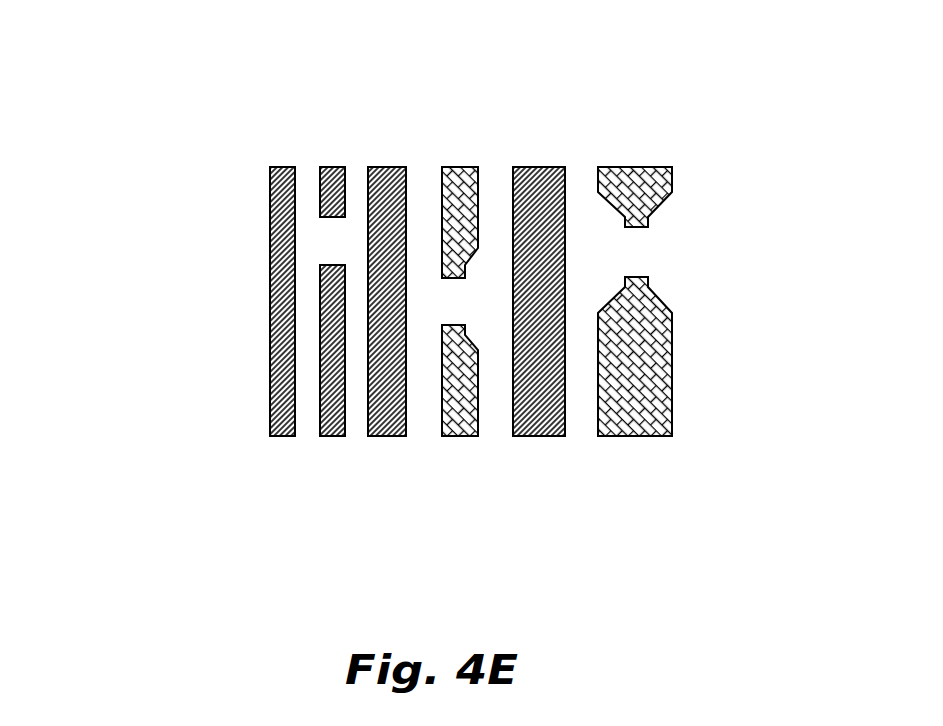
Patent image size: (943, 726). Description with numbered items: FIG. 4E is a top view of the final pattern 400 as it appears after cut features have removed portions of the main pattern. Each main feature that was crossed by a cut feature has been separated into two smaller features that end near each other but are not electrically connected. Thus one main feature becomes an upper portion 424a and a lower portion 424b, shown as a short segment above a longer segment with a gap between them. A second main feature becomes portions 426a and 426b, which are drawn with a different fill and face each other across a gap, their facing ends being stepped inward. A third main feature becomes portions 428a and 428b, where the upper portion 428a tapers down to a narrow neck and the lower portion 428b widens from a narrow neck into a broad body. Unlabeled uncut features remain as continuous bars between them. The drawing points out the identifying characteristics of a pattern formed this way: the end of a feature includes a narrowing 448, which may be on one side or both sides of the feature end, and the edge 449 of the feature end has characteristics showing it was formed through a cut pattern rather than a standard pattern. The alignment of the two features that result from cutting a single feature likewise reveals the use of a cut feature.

The pattern 400 is at (203, 141).
The first portion of main feature 424a is at (331, 156).
The second portion of main feature 424b is at (331, 447).
The first portion of main feature 426a is at (459, 156).
The second portion of main feature 426b is at (459, 447).
The first portion of main feature 428a is at (635, 156).
The second portion of main feature 428b is at (635, 447).
The narrowing 448 is at (673, 229).
The edge 449 is at (663, 267).